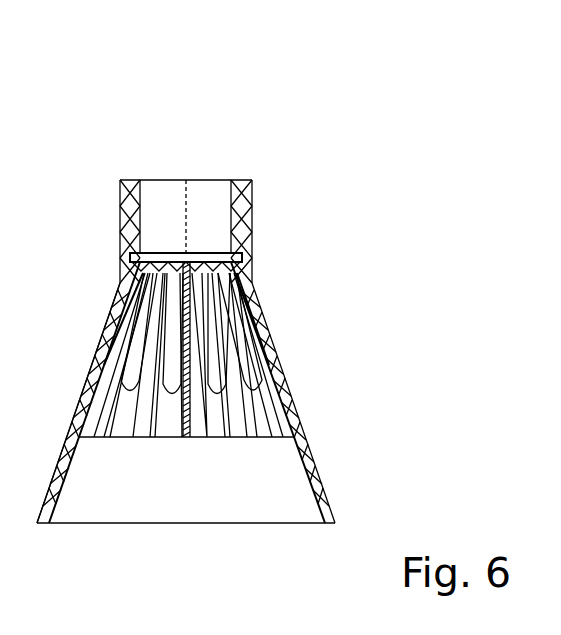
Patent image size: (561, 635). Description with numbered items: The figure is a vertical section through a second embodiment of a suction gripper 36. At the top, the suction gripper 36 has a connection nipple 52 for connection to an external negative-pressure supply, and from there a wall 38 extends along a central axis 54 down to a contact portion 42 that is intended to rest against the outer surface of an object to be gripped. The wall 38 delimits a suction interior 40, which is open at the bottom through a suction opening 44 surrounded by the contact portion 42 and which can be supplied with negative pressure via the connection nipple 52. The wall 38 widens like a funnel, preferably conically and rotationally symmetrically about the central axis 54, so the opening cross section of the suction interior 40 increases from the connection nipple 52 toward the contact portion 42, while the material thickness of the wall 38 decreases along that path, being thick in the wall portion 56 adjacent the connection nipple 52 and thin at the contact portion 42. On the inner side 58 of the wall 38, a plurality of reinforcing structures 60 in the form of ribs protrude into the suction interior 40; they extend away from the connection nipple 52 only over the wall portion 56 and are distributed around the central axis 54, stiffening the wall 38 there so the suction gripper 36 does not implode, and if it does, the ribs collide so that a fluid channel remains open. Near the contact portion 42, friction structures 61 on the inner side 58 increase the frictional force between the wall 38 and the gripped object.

The suction gripper 36 is at (183, 127).
The connection nipple 52 is at (266, 217).
The central axis 54 is at (186, 198).
The wall portion 56 is at (275, 318).
The wall 38 is at (280, 365).
The contact portion 42 is at (345, 493).
The suction interior 40 is at (147, 487).
The suction opening 44 is at (141, 524).
The reinforcing structures 60 is at (190, 440).
The inner side 58 is at (275, 415).
The friction structures 61 is at (55, 496).